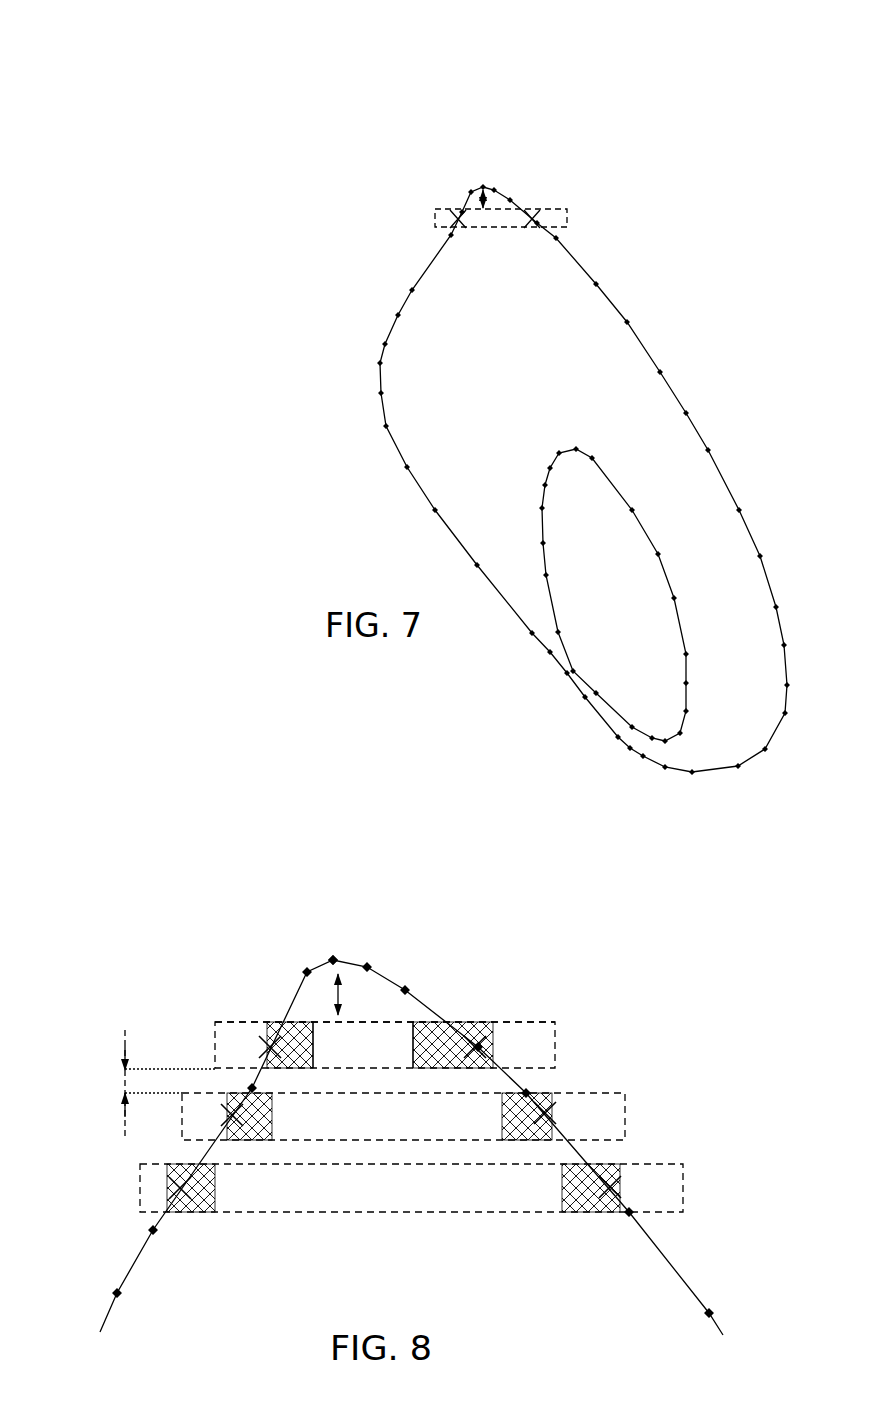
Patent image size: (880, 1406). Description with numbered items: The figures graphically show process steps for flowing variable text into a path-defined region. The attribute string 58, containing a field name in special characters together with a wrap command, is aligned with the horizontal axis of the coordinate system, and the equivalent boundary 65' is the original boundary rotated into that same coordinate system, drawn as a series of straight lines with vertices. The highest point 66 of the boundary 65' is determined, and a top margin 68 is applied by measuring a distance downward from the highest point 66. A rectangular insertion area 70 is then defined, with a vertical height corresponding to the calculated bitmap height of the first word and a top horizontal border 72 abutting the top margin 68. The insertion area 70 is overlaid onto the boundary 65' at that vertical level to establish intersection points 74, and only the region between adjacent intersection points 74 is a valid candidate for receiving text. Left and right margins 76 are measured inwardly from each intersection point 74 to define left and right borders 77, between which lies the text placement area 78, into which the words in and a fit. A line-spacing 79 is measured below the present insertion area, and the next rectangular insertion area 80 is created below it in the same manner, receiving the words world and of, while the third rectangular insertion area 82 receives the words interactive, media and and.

In FIG. 7, the attribute string 58 is at (524, 124).
In FIG. 8, the attribute string 58 is at (206, 832).
In FIG. 7, the equivalent boundary 65' is at (583, 481).
In FIG. 8, the equivalent boundary 65' is at (468, 1145).
In FIG. 7, the highest point 66 is at (485, 187).
In FIG. 8, the highest point 66 is at (337, 959).
In FIG. 7, the top margin 68 is at (472, 192).
In FIG. 8, the top margin 68 is at (337, 1016).
In FIG. 7, the rectangular insertion area 70 is at (560, 207).
In FIG. 8, the rectangular insertion area 70 is at (557, 1035).
In FIG. 8, the top horizontal border 72 is at (528, 1018).
In FIG. 7, the intersection point 74 is at (552, 219).
In FIG. 8, the intersection point 74 is at (247, 1038).
In FIG. 8, the left and right margins 76 is at (297, 1038).
In FIG. 8, the left and right borders 77 is at (323, 1028).
In FIG. 8, the text placement area 78 is at (373, 1033).
In FIG. 8, the line-spacing 79 is at (125, 1082).
In FIG. 8, the second rectangular insertion area 80 is at (627, 1108).
In FIG. 8, the third rectangular insertion area 82 is at (672, 1163).